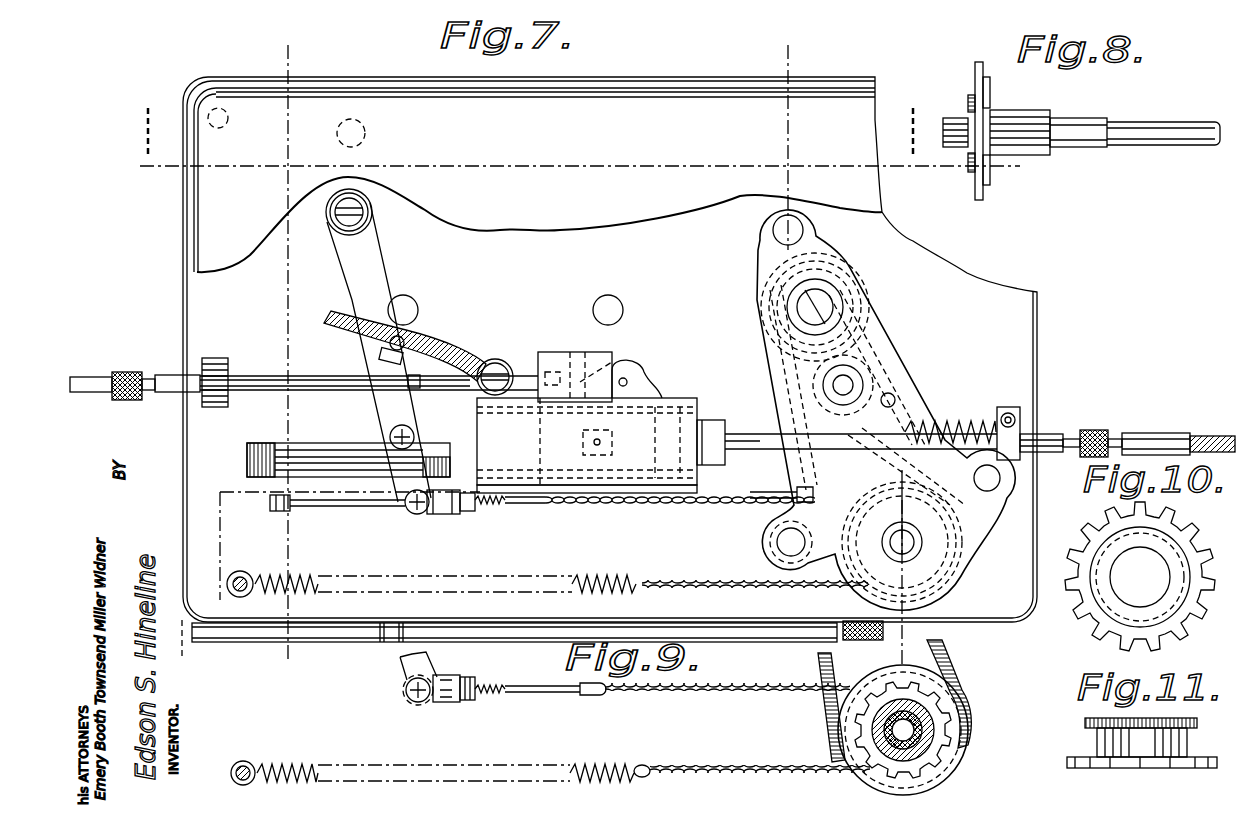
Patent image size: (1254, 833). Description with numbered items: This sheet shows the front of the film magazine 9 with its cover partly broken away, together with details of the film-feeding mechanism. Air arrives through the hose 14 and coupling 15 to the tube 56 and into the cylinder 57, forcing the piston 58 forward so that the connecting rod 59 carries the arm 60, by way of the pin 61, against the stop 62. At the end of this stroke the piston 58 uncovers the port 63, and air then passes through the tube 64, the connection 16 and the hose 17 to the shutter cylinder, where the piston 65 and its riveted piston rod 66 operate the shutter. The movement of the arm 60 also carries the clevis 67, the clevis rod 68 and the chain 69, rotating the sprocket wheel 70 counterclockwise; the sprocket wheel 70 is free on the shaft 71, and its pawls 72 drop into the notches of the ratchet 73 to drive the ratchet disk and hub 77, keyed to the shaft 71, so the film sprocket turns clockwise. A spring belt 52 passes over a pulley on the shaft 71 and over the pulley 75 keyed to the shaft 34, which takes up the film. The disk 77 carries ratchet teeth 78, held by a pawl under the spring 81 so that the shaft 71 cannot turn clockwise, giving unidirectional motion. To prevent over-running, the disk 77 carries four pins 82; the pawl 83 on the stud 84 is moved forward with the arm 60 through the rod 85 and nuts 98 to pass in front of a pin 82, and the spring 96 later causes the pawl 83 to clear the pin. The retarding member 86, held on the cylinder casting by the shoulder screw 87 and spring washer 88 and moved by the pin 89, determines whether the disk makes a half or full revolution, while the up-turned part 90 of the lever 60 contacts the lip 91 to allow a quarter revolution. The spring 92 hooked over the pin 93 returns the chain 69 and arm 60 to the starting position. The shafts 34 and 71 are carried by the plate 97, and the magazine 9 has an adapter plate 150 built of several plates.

In FIG. 7, the magazine 9 is at (205, 292).
In FIG. 7, the hose 14 is at (1185, 433).
In FIG. 7, the coupling 15 is at (1092, 430).
In FIG. 7, the connection 16 is at (798, 48).
In FIG. 7, the hose 17 is at (275, 56).
In FIG. 7, the shaft 34 is at (832, 304).
In FIG. 9, the spring belt 52 is at (952, 666).
In FIG. 7, the tube 56 is at (1045, 434).
In FIG. 7, the cylinder 57 is at (679, 398).
In FIG. 7, the piston 58 is at (643, 420).
In FIG. 7, the connecting rod 59 is at (472, 432).
In FIG. 7, the arm 60 is at (376, 260).
In FIG. 9, the arm 60 is at (402, 670).
In FIG. 7, the pin 61 is at (390, 436).
In FIG. 7, the stop 62 is at (265, 437).
In FIG. 7, the port 63 is at (605, 368).
In FIG. 7, the tube 64 is at (318, 374).
In FIG. 7, the piston 65 is at (410, 512).
In FIG. 9, the piston 65 is at (410, 700).
In FIG. 7, the piston rod 66 is at (371, 212).
In FIG. 7, the clevis 67 is at (450, 516).
In FIG. 9, the clevis 67 is at (446, 704).
In FIG. 7, the clevis rod 68 is at (537, 505).
In FIG. 9, the clevis rod 68 is at (530, 694).
In FIG. 7, the chain 69 is at (740, 497).
In FIG. 9, the chain 69 is at (742, 693).
In FIG. 7, the sprocket wheel 70 is at (950, 545).
In FIG. 9, the sprocket wheel 70 is at (940, 727).
In FIG. 10, the sprocket wheel 70 is at (1193, 620).
In FIG. 11, the sprocket wheel 70 is at (1135, 769).
In FIG. 7, the shaft 71 is at (912, 553).
In FIG. 8, the shaft 71 is at (1088, 146).
In FIG. 9, the shaft 71 is at (858, 742).
In FIG. 8, the pawls 72 is at (990, 94).
In FIG. 10, the ratchet 73 is at (1175, 533).
In FIG. 11, the ratchet 73 is at (1128, 721).
In FIG. 7, the pulley 75 is at (770, 300).
In FIG. 9, the pulley 75 is at (958, 760).
In FIG. 8, the ratchet disk and hub 77 is at (978, 62).
In FIG. 9, the ratchet disk and hub 77 is at (836, 722).
In FIG. 8, the ratchet teeth 78 is at (973, 188).
In FIG. 7, the spring 81 is at (772, 520).
In FIG. 8, the pins 82 is at (970, 100).
In FIG. 7, the pawl 83 is at (905, 402).
In FIG. 7, the stud 84 is at (860, 380).
In FIG. 7, the rod 85 is at (350, 508).
In FIG. 7, the retarding member 86 is at (440, 346).
In FIG. 7, the shoulder screw 87 is at (496, 359).
In FIG. 7, the spring washer 88 is at (508, 368).
In FIG. 7, the pin 89 is at (403, 342).
In FIG. 7, the up-turned part 90 is at (420, 383).
In FIG. 9, the up-turned part 90 is at (470, 677).
In FIG. 7, the lip 91 is at (380, 355).
In FIG. 7, the spring 92 is at (580, 576).
In FIG. 9, the spring 92 is at (578, 765).
In FIG. 7, the pin 93 is at (248, 565).
In FIG. 9, the pin 93 is at (245, 762).
In FIG. 7, the spring 96 is at (985, 426).
In FIG. 7, the plate 97 is at (984, 503).
In FIG. 7, the nuts 98 is at (280, 512).
In FIG. 7, the adapter plate 150 is at (307, 632).